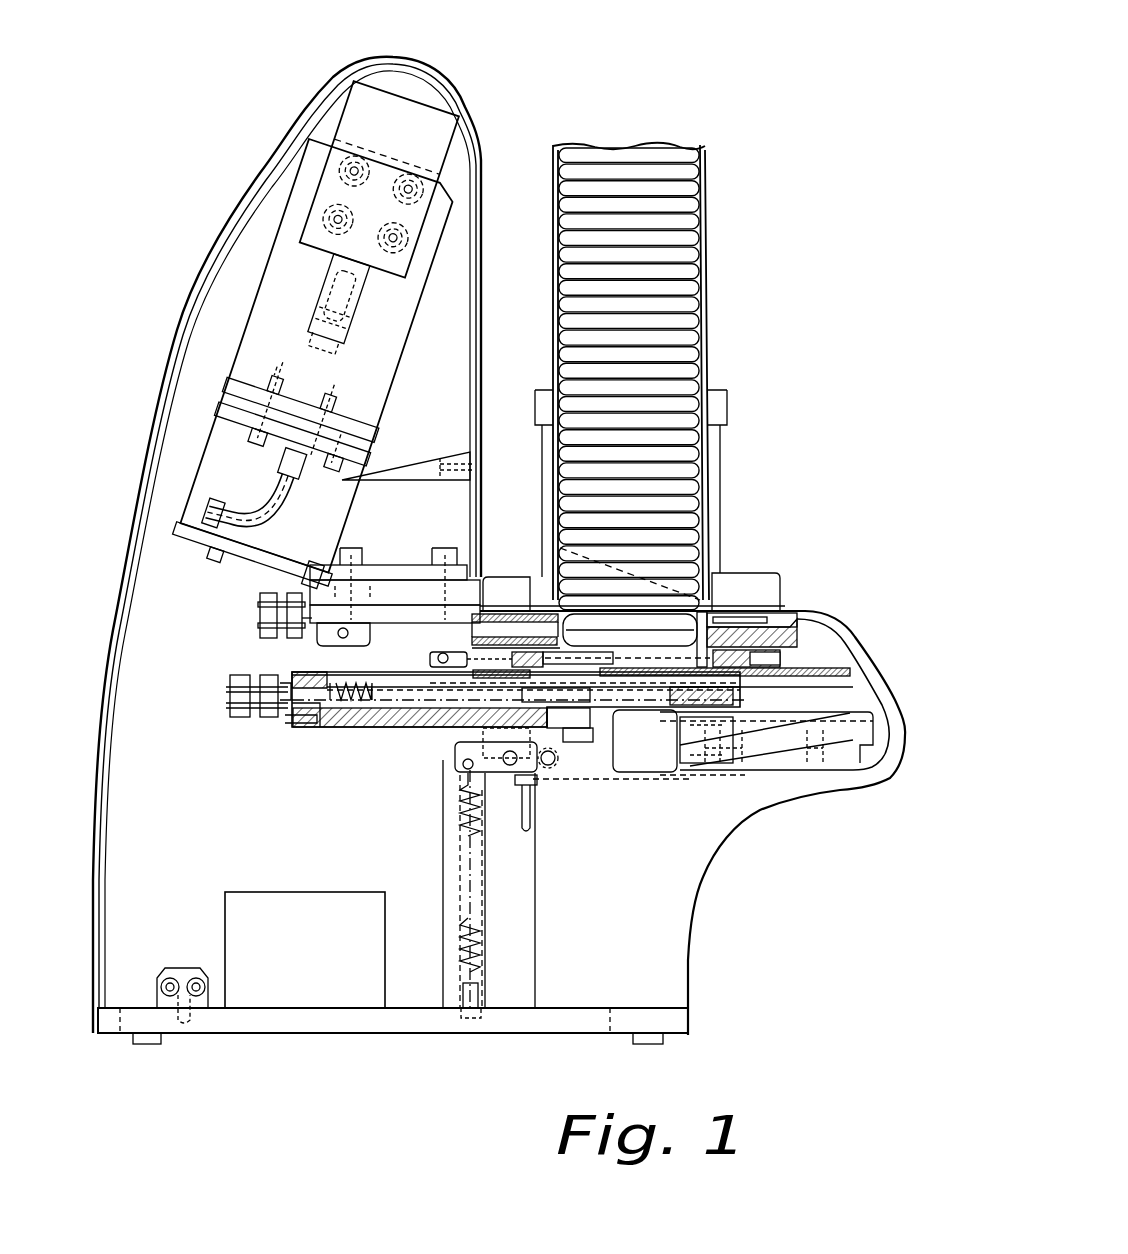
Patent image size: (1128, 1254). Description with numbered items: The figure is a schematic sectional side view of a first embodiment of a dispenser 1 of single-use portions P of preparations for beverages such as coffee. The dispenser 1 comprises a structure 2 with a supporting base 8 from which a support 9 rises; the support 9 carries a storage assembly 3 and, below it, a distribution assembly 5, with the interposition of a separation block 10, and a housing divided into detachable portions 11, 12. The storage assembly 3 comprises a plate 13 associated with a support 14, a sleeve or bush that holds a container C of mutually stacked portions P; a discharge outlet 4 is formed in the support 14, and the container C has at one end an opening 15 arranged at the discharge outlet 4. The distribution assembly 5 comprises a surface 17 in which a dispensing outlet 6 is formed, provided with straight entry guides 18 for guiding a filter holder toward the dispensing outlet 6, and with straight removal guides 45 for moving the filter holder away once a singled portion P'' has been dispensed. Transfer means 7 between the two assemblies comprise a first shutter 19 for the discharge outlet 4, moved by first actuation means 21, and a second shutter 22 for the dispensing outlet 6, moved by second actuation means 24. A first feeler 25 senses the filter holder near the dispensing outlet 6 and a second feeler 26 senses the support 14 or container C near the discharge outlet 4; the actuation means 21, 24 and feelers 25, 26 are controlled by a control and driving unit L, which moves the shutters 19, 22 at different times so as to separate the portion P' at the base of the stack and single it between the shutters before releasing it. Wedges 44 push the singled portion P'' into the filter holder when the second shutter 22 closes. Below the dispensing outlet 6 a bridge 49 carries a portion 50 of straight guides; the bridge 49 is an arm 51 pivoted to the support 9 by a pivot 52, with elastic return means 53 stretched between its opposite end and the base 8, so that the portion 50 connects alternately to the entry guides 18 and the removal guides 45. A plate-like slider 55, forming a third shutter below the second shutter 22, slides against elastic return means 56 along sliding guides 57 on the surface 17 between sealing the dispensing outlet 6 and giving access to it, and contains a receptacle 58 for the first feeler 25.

The dispenser 1 is at (742, 98).
The structure 2 is at (200, 1040).
The storage assembly 3 is at (784, 472).
The discharge outlet 4 is at (710, 602).
The distribution assembly 5 is at (213, 725).
The dispensing outlet 6 is at (690, 722).
The transfer means 7 is at (806, 618).
The supporting base 8 is at (328, 1033).
The support 9 is at (527, 993).
The separation block 10 is at (800, 660).
The detachable housing portion 11 is at (827, 783).
The detachable housing portion 12 is at (140, 576).
The plate 13 is at (786, 600).
The support 14 is at (732, 384).
The opening 15 is at (710, 602).
The surface 17 is at (336, 726).
The straight entry guides 18 is at (843, 700).
The first shutter 19 is at (538, 603).
The first actuation means 21 is at (262, 338).
The second shutter 22 is at (410, 724).
The second actuation means 24 is at (296, 272).
The first feeler 25 is at (300, 716).
The second feeler 26 is at (258, 618).
The wedges 44 is at (477, 697).
The straight guides 45 is at (788, 735).
The bridge 49 is at (458, 776).
The portion of straight guides 50 is at (620, 712).
The arm 51 is at (672, 740).
The pivot 52 is at (482, 822).
The elastic return means 53 is at (472, 940).
The plate-like slider 55 is at (565, 748).
The elastic return means 56 is at (320, 672).
The sliding guides 57 is at (400, 683).
The receptacle 58 is at (645, 707).
The container C is at (716, 190).
The portions P is at (544, 229).
The portion at the base of the stack P' is at (603, 507).
The singled portion P'' is at (732, 628).
The control and driving unit L is at (311, 925).